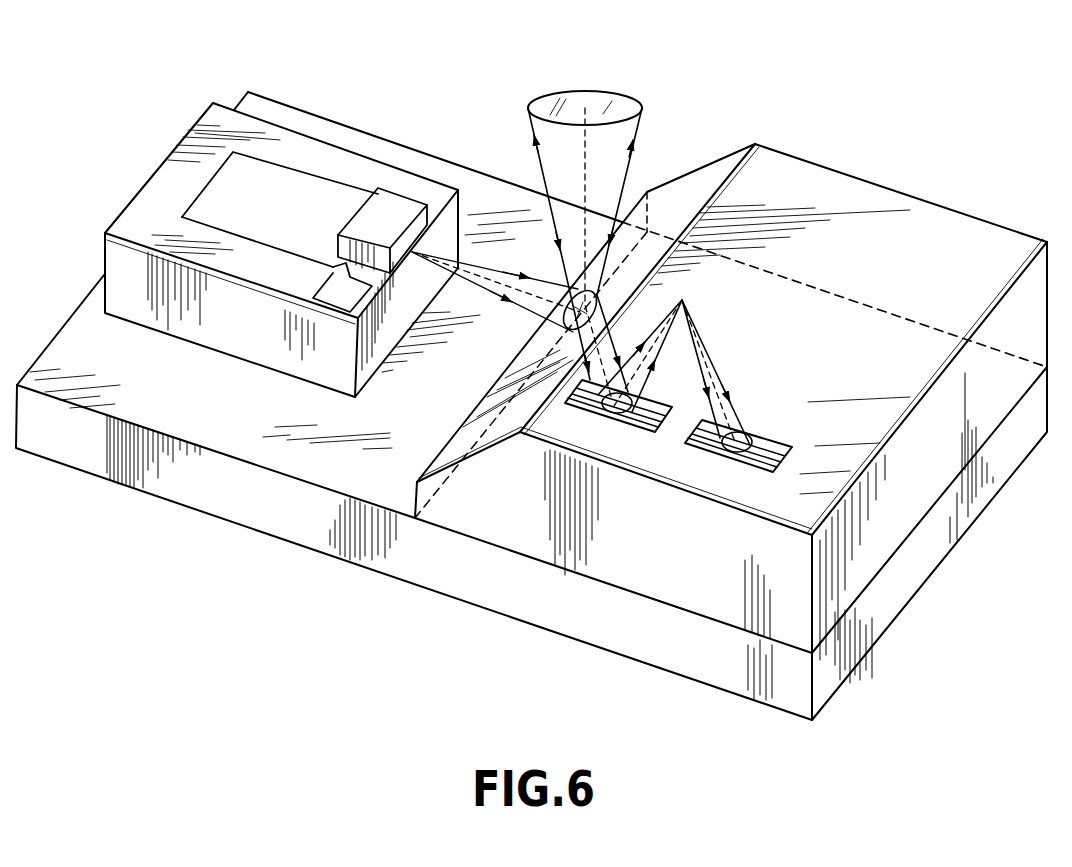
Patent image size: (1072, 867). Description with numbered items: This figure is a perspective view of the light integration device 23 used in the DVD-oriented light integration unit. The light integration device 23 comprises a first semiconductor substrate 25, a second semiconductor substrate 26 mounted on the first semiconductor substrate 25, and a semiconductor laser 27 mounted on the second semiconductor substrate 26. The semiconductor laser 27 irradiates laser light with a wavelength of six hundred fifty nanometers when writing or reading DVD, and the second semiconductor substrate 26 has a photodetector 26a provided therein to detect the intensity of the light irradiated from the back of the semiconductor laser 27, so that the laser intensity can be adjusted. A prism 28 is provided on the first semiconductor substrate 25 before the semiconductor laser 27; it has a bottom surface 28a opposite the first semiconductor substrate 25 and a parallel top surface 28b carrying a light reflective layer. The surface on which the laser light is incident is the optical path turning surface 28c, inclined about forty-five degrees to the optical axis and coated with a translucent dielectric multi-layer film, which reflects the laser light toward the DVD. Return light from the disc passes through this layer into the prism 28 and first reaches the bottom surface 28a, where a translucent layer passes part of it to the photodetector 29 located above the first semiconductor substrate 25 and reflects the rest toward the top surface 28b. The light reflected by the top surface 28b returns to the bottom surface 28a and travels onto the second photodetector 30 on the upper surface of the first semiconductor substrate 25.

The light integration device 23 is at (818, 108).
The first semiconductor substrate 25 is at (432, 568).
The second semiconductor substrate 26 is at (273, 348).
The photodetector 26a is at (313, 188).
The semiconductor laser 27 is at (400, 204).
The prism 28 is at (640, 578).
The bottom surface 28a is at (880, 547).
The top surface 28b is at (925, 214).
The optical path turning surface 28c is at (687, 188).
The photodetector 29 is at (625, 422).
The second photodetector 30 is at (752, 462).